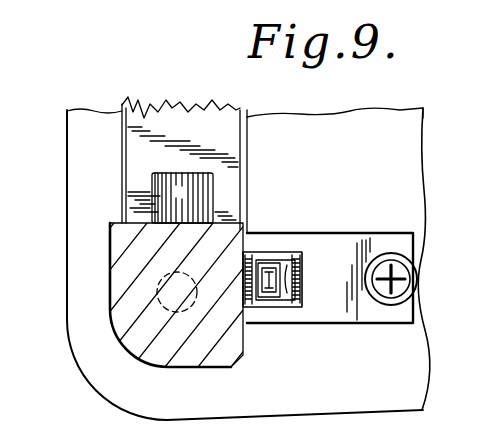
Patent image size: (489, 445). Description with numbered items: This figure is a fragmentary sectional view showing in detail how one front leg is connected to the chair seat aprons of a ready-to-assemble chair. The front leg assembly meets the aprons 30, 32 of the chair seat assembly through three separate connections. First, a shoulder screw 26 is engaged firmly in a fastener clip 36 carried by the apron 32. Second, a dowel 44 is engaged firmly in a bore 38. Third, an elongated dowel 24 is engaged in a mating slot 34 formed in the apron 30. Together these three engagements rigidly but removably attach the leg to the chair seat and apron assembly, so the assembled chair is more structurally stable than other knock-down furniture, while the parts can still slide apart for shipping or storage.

The elongated dowel 24 is at (167, 190).
The shoulder screw 26 is at (270, 300).
The apron 30 is at (140, 144).
The apron 32 is at (363, 313).
The mating slot 34 is at (167, 208).
The fastener clip 36 is at (283, 253).
The bore 38 is at (157, 297).
The dowel 44 is at (165, 312).